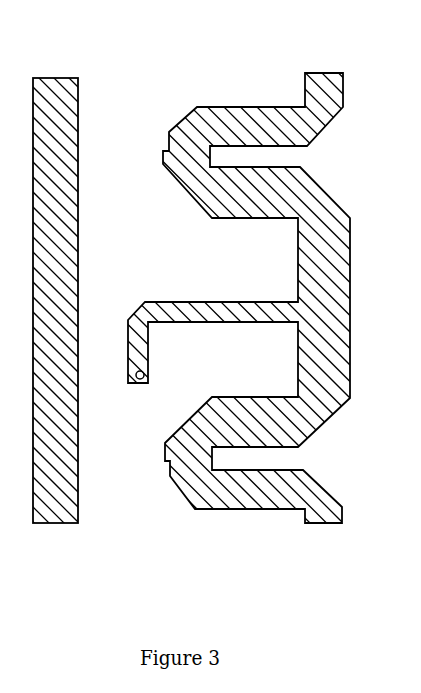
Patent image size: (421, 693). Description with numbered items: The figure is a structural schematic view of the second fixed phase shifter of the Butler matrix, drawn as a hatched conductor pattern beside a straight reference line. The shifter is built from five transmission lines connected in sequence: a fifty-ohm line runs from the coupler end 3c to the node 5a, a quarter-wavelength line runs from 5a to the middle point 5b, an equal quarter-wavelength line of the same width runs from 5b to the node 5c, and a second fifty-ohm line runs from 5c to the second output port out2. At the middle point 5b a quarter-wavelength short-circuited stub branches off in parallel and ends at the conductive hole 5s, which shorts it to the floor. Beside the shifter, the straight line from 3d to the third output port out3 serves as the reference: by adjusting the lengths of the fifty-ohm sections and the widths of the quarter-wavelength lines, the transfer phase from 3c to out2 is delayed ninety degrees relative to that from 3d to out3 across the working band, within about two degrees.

The output end of third directional coupler 3c is at (210, 346).
The output end of third directional coupler 3d is at (210, 346).
The junction point of second fixed phase shifter 5a is at (210, 346).
The middle point of second fixed phase shifter 5b is at (210, 346).
The junction point of second fixed phase shifter 5c is at (210, 346).
The conductive hole 5s is at (150, 373).
The second output port out2 is at (210, 346).
The third output port out3 is at (210, 346).